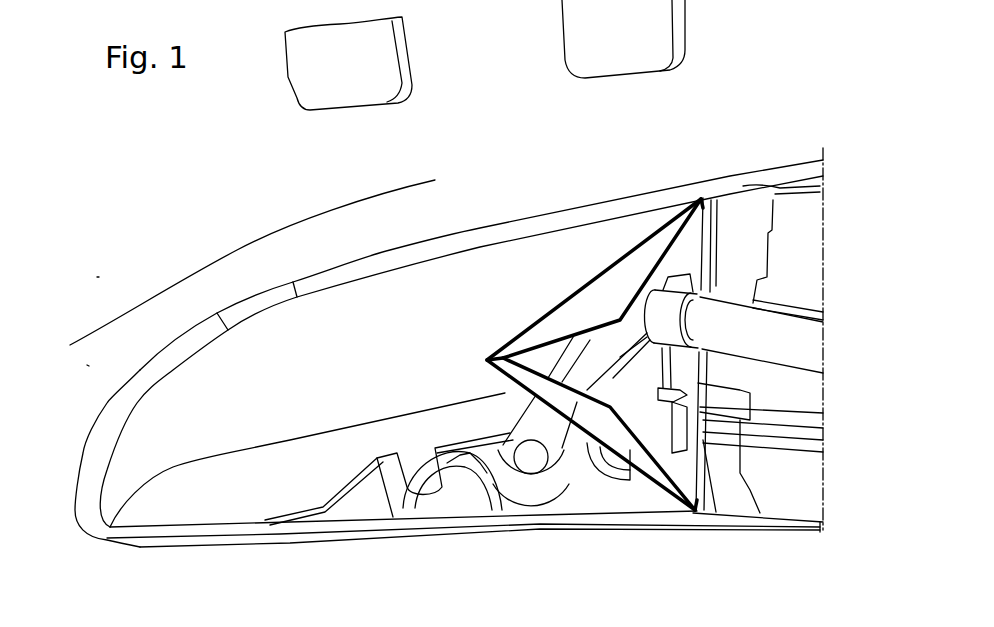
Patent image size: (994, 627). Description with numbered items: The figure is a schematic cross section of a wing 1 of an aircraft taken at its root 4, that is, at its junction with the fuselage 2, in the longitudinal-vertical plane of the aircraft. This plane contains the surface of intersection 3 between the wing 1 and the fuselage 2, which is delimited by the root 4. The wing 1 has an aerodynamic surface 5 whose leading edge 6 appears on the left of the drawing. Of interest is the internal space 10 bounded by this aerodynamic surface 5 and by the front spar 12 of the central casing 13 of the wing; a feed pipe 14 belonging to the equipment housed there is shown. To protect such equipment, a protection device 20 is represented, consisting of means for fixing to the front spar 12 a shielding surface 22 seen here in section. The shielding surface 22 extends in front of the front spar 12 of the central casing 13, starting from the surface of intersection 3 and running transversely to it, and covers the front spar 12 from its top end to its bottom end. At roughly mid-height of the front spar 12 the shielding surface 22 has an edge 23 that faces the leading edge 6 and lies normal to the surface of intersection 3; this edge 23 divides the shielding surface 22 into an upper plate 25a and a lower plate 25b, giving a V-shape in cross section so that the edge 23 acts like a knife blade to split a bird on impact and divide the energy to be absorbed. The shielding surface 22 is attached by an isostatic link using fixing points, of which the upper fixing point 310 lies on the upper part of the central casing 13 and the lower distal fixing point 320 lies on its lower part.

The wing 1 is at (86, 365).
The fuselage 2 is at (96, 277).
The surface of intersection 3 is at (145, 442).
The root 4 is at (93, 344).
The aerodynamic surface 5 is at (103, 383).
The leading edge 6 is at (88, 525).
The internal space 10 is at (177, 507).
The front spar 12 is at (717, 490).
The central casing 13 is at (832, 290).
The feed pipe 14 is at (548, 497).
The protection device 20 is at (623, 236).
The shielding surface 22 is at (593, 261).
The edge 23 is at (484, 346).
The upper plate 25a is at (570, 312).
The lower plate 25b is at (640, 447).
The upper fixing point 310 is at (709, 197).
The lower distal fixing point 320 is at (697, 512).